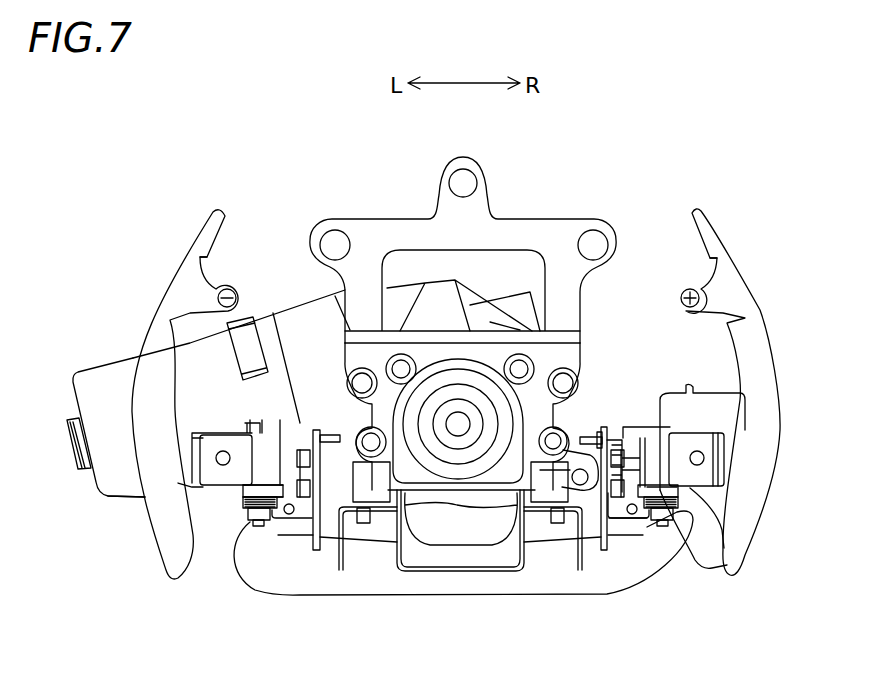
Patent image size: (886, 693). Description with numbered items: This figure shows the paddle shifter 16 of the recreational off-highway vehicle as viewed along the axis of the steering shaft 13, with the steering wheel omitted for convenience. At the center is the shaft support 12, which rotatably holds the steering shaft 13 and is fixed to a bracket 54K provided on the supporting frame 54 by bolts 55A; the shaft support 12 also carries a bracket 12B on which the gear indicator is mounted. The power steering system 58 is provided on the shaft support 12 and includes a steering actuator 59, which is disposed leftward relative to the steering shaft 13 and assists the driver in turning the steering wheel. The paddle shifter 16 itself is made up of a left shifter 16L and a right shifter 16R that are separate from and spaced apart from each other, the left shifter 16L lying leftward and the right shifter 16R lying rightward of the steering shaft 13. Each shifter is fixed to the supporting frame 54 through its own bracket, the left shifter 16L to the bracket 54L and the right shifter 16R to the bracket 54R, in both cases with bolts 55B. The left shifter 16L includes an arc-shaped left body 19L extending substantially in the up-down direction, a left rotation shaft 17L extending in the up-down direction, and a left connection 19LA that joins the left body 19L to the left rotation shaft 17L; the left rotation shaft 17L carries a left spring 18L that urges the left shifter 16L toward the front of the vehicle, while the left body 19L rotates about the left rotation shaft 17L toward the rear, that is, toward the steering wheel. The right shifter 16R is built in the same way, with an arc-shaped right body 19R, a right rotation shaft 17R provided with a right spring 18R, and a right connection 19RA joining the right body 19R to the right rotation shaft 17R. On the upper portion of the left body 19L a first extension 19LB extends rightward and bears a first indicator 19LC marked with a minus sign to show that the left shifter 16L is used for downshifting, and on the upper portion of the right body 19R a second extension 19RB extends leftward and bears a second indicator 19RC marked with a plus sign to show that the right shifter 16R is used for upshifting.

The shaft support 12 is at (553, 401).
The bracket 12B is at (487, 216).
The steering shaft 13 is at (452, 430).
The paddle shifter 16 is at (457, 363).
The left shifter 16L is at (169, 363).
The right shifter 16R is at (746, 361).
The left rotation shaft 17L is at (201, 446).
The right rotation shaft 17R is at (695, 479).
The left spring 18L is at (247, 503).
The right spring 18R is at (727, 547).
The left body 19L is at (157, 347).
The right body 19R is at (762, 368).
The left connection 19LA is at (223, 467).
The right connection 19RA is at (703, 472).
The first extension 19LB is at (234, 287).
The second extension 19RB is at (683, 287).
The first indicator 19LC is at (172, 300).
The second indicator 19RC is at (728, 298).
The supporting frame 54 is at (463, 584).
The bracket 54L is at (290, 550).
The bracket 54R is at (617, 540).
The bracket 54K is at (460, 577).
The bolts 55A is at (367, 537).
The bolts 55B is at (317, 437).
The power steering system 58 is at (119, 516).
The steering actuator 59 is at (113, 447).